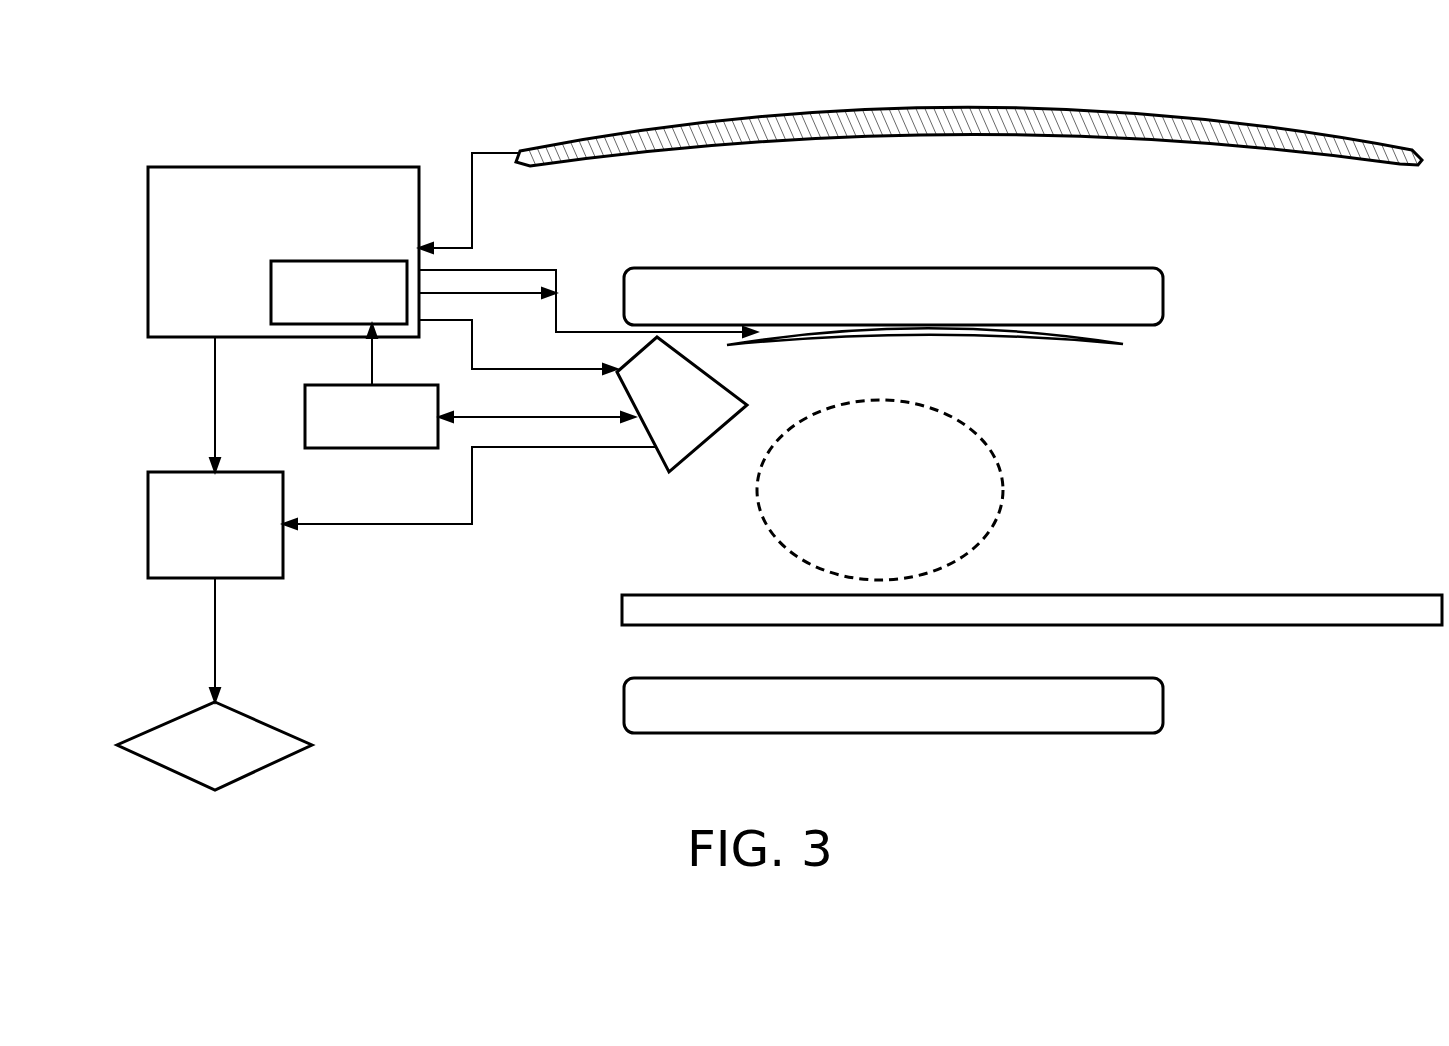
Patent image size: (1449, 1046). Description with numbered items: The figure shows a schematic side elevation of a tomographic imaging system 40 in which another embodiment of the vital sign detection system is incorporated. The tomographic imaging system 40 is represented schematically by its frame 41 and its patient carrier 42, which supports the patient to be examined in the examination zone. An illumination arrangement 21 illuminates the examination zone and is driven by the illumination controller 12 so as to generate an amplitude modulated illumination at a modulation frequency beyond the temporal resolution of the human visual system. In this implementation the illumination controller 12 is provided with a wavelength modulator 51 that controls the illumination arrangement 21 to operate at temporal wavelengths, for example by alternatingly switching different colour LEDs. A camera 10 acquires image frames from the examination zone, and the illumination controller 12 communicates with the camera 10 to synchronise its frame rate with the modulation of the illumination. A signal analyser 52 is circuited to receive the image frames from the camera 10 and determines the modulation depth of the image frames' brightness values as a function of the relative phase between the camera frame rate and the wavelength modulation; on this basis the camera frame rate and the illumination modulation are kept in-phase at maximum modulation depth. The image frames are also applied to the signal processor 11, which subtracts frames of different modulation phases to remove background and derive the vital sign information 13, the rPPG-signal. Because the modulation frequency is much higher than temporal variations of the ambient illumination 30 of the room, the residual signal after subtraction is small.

The ambient illumination 30 is at (1373, 137).
The illumination controller 12 is at (148, 243).
The wavelength modulator 51 is at (290, 328).
The signal analyser 52 is at (370, 450).
The signal processor 11 is at (148, 530).
The vital sign information 13 is at (165, 722).
The camera 10 is at (683, 465).
The tomographic imaging system 40 is at (1163, 290).
The illumination arrangement 21 is at (1073, 342).
The patient carrier 42 is at (1003, 494).
The frame 41 is at (1370, 628).